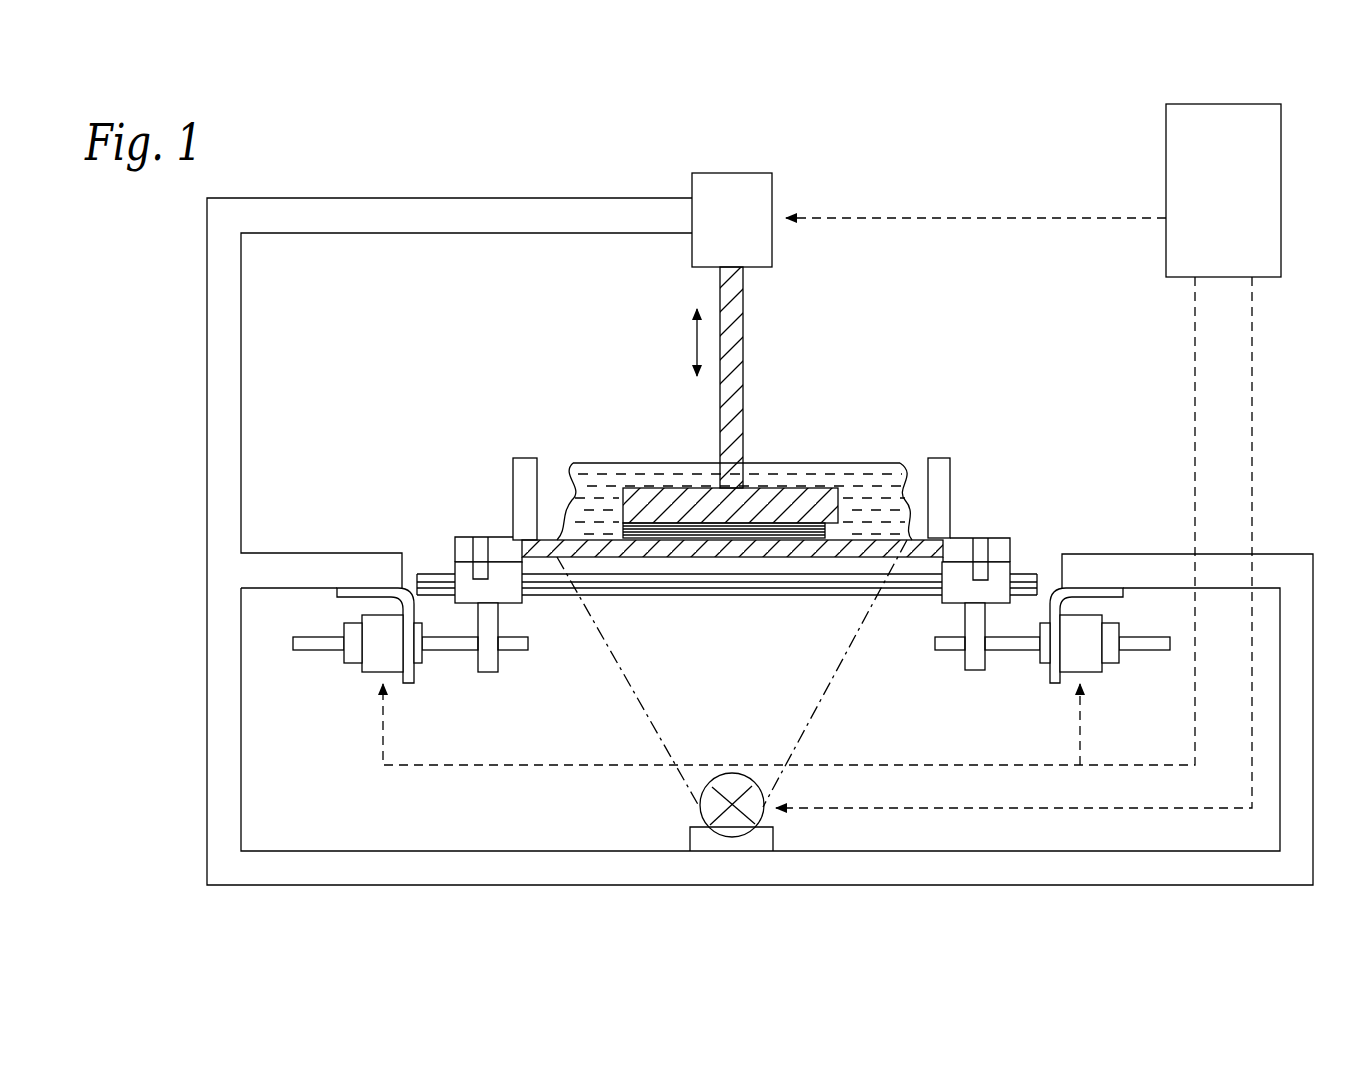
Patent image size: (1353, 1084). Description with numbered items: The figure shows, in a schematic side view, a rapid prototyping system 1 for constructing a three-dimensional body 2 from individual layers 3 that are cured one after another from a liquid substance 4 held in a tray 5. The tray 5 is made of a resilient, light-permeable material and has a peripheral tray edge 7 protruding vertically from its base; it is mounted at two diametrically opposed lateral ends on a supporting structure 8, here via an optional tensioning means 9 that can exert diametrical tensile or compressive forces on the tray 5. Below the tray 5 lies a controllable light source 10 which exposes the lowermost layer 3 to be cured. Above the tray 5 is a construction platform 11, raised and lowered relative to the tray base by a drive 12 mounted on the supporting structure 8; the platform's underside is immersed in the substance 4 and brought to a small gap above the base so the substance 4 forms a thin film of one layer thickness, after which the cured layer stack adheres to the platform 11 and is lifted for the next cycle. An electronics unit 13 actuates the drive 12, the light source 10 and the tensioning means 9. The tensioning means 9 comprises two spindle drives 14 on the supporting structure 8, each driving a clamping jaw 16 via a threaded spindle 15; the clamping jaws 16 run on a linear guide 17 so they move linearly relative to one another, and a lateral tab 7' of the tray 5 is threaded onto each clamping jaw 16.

The system 1 is at (187, 813).
The three-dimensional body 2 is at (731, 547).
The layers 3 is at (752, 523).
The liquid substance 4 is at (603, 503).
The tray 5 is at (735, 434).
The tray edge 7 is at (735, 467).
The lateral tab 7' is at (729, 564).
The supporting structure 8 is at (432, 216).
The tensioning means 9 is at (513, 668).
The light source 10 is at (730, 825).
The construction platform 11 is at (678, 510).
The drive 12 is at (715, 195).
The electronics unit 13 is at (1222, 175).
The spindle drive 14 is at (385, 652).
The threaded spindle 15 is at (437, 652).
The clamping jaw 16 is at (495, 590).
The linear guide 17 is at (720, 527).